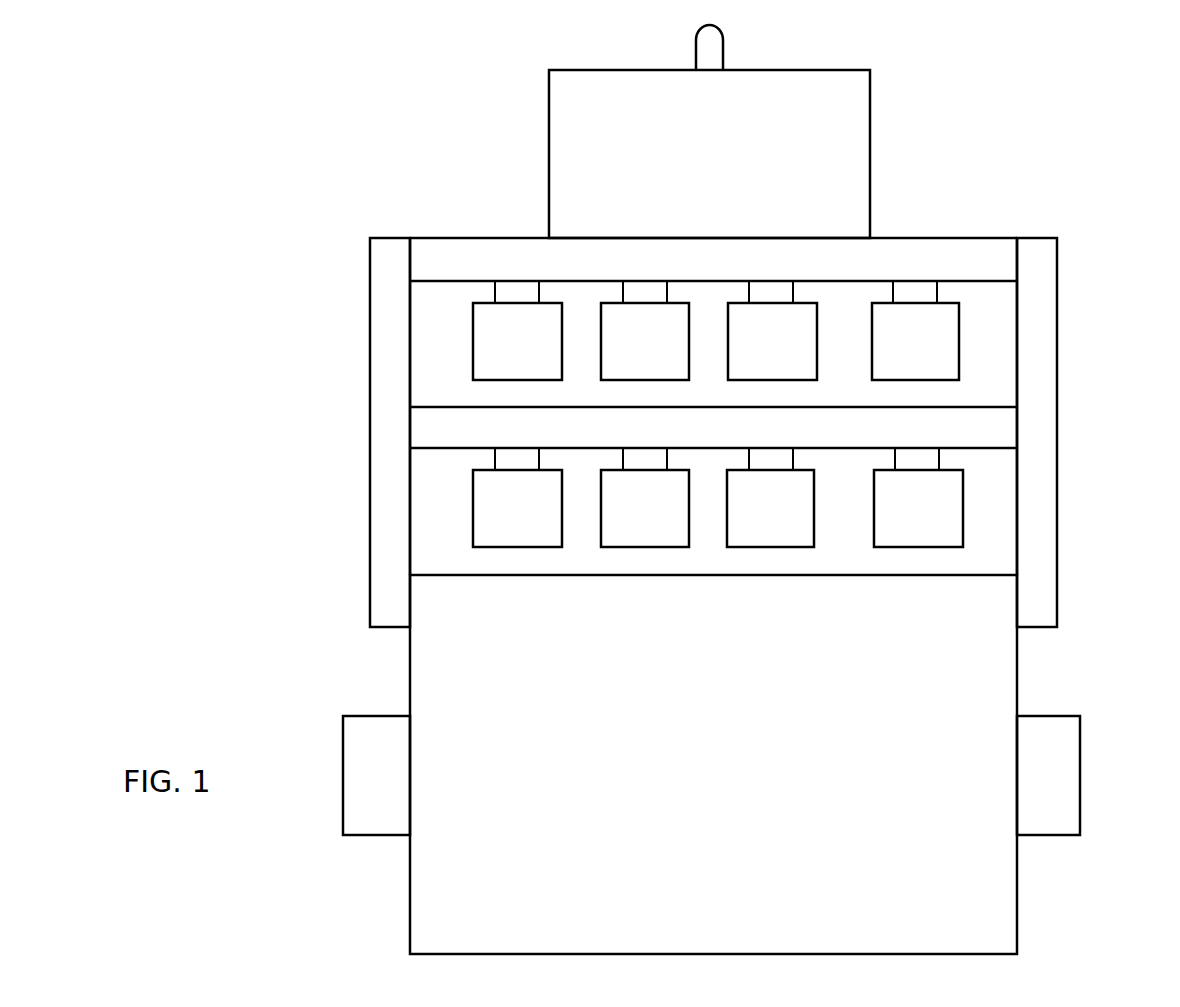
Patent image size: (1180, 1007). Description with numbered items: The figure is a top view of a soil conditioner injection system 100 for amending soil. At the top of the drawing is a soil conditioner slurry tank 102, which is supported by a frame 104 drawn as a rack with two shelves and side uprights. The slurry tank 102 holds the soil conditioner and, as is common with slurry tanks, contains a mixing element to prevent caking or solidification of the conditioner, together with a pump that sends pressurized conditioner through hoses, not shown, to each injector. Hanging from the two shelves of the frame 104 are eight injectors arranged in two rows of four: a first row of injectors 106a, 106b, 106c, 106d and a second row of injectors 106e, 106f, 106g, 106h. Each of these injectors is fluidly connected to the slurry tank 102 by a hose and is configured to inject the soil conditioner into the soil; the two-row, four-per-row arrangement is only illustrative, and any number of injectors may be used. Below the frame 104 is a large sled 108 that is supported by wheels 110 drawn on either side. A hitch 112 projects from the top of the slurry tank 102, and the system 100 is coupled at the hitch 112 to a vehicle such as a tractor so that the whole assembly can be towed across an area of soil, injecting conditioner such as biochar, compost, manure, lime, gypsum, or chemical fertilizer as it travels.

The soil conditioner injection system 100 is at (350, 130).
The soil conditioner slurry tank 102 is at (709, 154).
The frame 104 is at (1057, 240).
The injector 106a is at (517, 330).
The injector 106b is at (645, 330).
The injector 106c is at (772, 330).
The injector 106d is at (915, 330).
The injector 106e is at (517, 497).
The injector 106f is at (645, 497).
The injector 106g is at (770, 497).
The injector 106h is at (918, 497).
The sled 108 is at (713, 764).
The wheels 110 is at (711, 775).
The hitch 112 is at (723, 52).